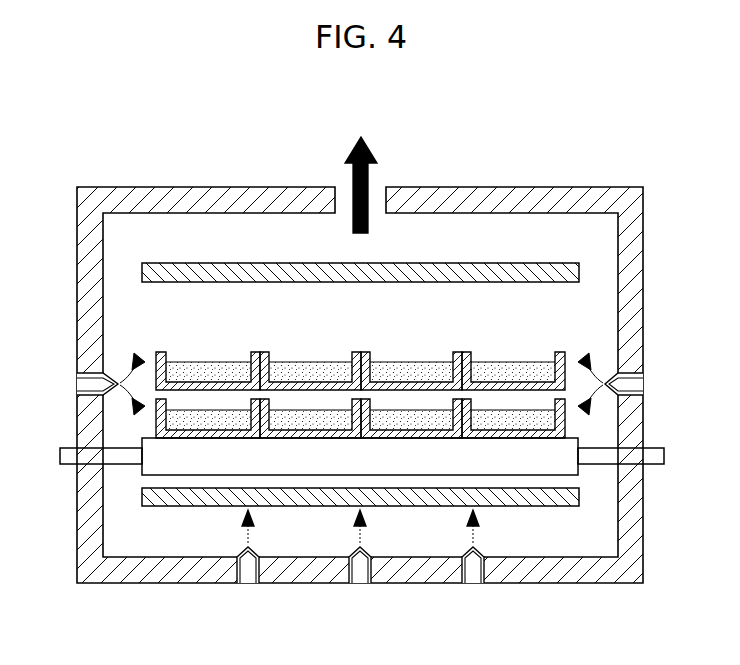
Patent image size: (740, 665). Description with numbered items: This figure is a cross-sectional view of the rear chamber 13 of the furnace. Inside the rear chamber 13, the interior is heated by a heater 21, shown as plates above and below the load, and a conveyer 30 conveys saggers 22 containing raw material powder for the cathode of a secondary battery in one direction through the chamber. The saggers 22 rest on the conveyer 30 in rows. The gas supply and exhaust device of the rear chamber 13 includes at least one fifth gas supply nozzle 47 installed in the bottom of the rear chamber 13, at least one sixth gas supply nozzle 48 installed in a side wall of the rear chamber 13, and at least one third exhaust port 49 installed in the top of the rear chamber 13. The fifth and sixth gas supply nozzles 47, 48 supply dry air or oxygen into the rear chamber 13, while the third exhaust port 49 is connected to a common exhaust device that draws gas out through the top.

The rear chamber 13 is at (596, 195).
The heater 21 is at (233, 263).
The sagger 22 is at (467, 349).
The conveyer 30 is at (572, 468).
The fifth gas supply nozzle 47 is at (360, 572).
The sixth gas supply nozzle 48 is at (80, 383).
The third exhaust port 49 is at (377, 193).